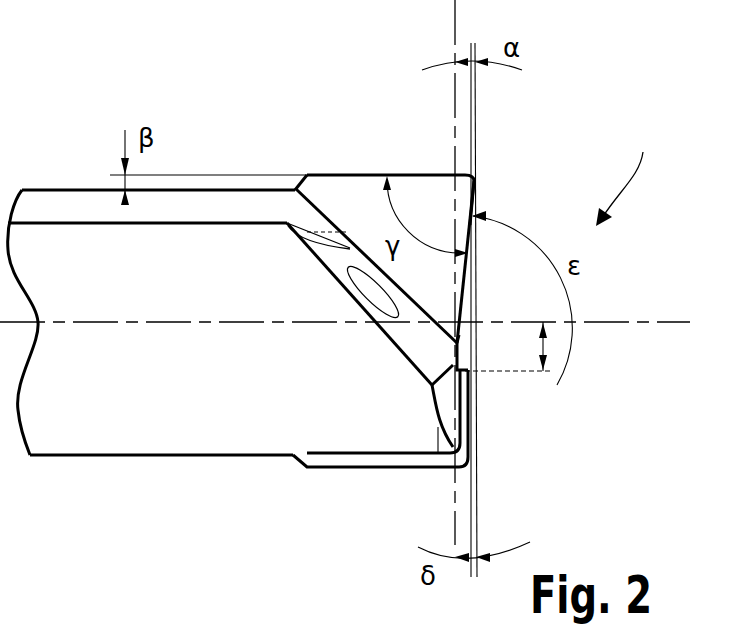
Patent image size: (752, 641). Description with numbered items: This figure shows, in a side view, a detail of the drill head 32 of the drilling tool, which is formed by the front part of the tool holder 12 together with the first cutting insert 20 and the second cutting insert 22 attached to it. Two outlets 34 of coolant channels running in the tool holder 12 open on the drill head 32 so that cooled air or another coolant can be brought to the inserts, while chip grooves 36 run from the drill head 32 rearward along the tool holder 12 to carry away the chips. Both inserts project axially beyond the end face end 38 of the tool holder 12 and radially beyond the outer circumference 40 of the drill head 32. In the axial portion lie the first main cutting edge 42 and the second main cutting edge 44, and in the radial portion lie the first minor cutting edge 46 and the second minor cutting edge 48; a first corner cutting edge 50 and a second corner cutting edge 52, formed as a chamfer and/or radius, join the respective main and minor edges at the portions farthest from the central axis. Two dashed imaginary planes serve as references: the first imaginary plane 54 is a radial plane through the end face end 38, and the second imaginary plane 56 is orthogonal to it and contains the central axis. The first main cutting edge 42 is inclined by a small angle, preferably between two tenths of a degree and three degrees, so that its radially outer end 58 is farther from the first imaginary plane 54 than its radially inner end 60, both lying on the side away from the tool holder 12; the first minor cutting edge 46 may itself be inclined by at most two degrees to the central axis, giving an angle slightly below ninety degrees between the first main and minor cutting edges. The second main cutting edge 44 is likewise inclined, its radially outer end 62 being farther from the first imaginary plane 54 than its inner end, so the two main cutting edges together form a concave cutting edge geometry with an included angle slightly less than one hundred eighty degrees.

The tool holder 12 is at (200, 430).
The first cutting insert 20 is at (417, 190).
The second cutting insert 22 is at (382, 458).
The drill head 32 is at (627, 171).
The coolant outlets 34 is at (373, 292).
The chip grooves 36 is at (50, 205).
The end face end 38 is at (450, 348).
The outer circumference 40 is at (100, 455).
The first main cutting edge 42 is at (470, 268).
The second main cutting edge 44 is at (471, 388).
The first minor cutting edge 46 is at (360, 173).
The second minor cutting edge 48 is at (337, 470).
The first corner cutting edge 50 is at (472, 176).
The second corner cutting edge 52 is at (473, 467).
The first imaginary plane 54 is at (454, 20).
The second imaginary plane 56 is at (662, 322).
The radially outer end of the first main cutting edge 58 is at (473, 193).
The radially inner end of the first main cutting edge 60 is at (461, 323).
The radially outer end of the second main cutting edge 62 is at (473, 451).